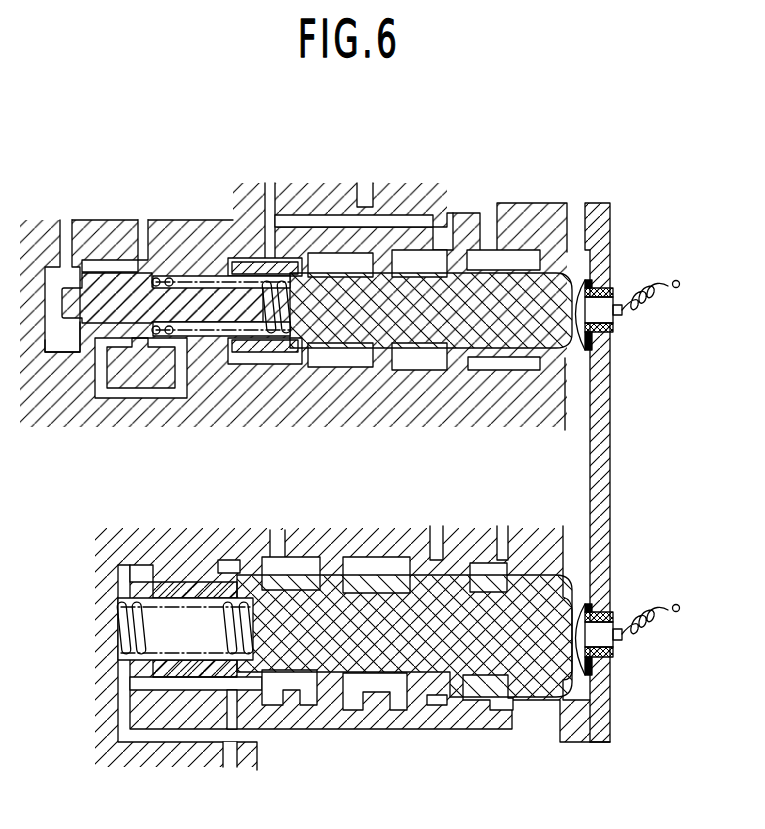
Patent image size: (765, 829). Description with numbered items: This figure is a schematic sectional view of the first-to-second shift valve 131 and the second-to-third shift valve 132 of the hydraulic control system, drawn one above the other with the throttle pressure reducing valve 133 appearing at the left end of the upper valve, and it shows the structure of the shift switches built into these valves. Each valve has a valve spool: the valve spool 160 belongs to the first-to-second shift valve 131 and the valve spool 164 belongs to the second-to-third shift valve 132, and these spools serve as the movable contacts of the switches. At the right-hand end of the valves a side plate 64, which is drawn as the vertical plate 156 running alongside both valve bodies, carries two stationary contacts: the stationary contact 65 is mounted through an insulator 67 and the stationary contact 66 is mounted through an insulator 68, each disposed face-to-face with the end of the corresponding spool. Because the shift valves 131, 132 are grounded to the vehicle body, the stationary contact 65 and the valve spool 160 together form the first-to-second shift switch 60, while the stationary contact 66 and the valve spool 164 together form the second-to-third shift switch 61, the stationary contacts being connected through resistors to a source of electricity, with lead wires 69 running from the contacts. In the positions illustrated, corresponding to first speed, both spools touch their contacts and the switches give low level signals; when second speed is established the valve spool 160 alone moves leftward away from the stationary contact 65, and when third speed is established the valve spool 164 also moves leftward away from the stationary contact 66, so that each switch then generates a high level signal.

The 2-3 shift valve 132 is at (505, 214).
The throttle pressure reducing valve 133 is at (78, 354).
The valve spool 164 is at (491, 345).
The valve spool 160 is at (397, 603).
The mounting plate 156 is at (580, 484).
The 1-2 shift valve 131 is at (528, 714).
The 2-3 shift switch 61 is at (629, 291).
The 1-2 shift switch 60 is at (638, 666).
The stationary contact 66 is at (608, 325).
The insulator 68 is at (616, 333).
The lead wire 69 is at (636, 308).
The stationary contact 65 is at (606, 640).
The insulator 67 is at (625, 652).
The side plate 64 is at (600, 733).